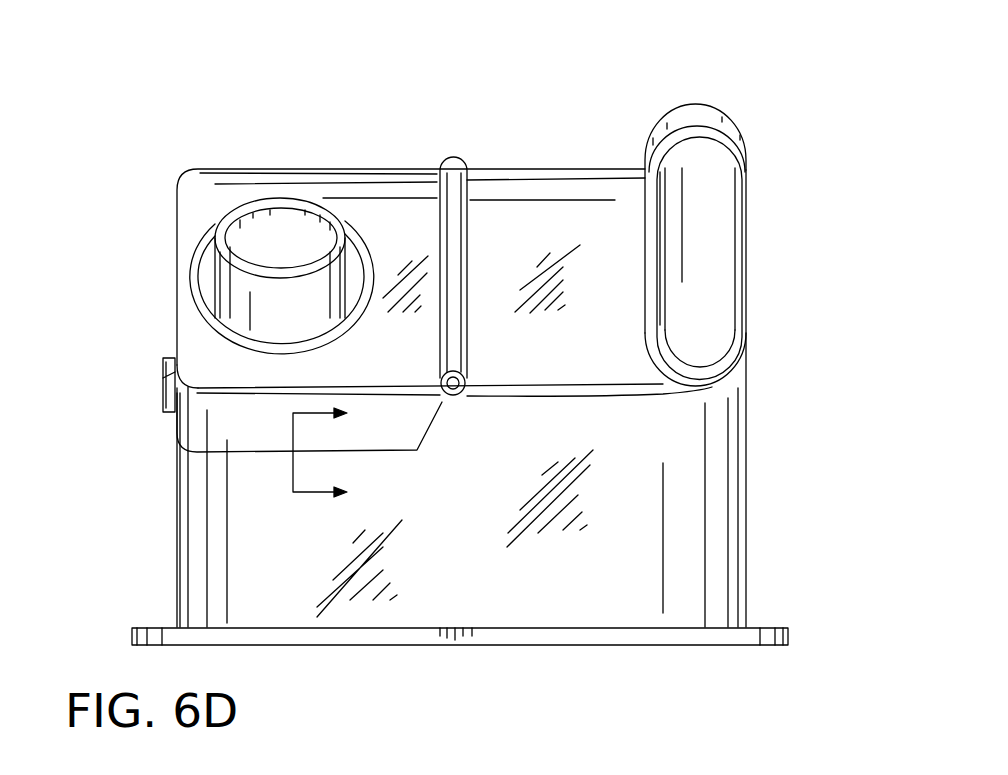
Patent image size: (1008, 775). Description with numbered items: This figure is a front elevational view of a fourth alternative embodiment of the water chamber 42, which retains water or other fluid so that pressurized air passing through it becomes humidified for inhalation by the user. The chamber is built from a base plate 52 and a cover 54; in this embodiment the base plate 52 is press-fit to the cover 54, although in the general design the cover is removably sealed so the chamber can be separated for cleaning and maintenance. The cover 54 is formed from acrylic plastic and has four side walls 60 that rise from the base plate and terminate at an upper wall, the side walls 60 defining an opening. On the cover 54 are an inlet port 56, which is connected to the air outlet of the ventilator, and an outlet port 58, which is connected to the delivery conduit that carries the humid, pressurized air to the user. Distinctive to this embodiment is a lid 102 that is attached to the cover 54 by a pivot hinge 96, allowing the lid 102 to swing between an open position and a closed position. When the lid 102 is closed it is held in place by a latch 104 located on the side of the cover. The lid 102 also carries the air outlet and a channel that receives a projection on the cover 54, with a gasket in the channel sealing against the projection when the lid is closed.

The water chamber 42 is at (784, 118).
The base plate 52 is at (498, 640).
The cover 54 is at (173, 570).
The inlet port 56 is at (730, 298).
The outlet port 58 is at (228, 273).
The side walls 60 is at (723, 522).
The pivot hinge 96 is at (462, 228).
The lid 102 is at (388, 192).
The latch 104 is at (163, 388).